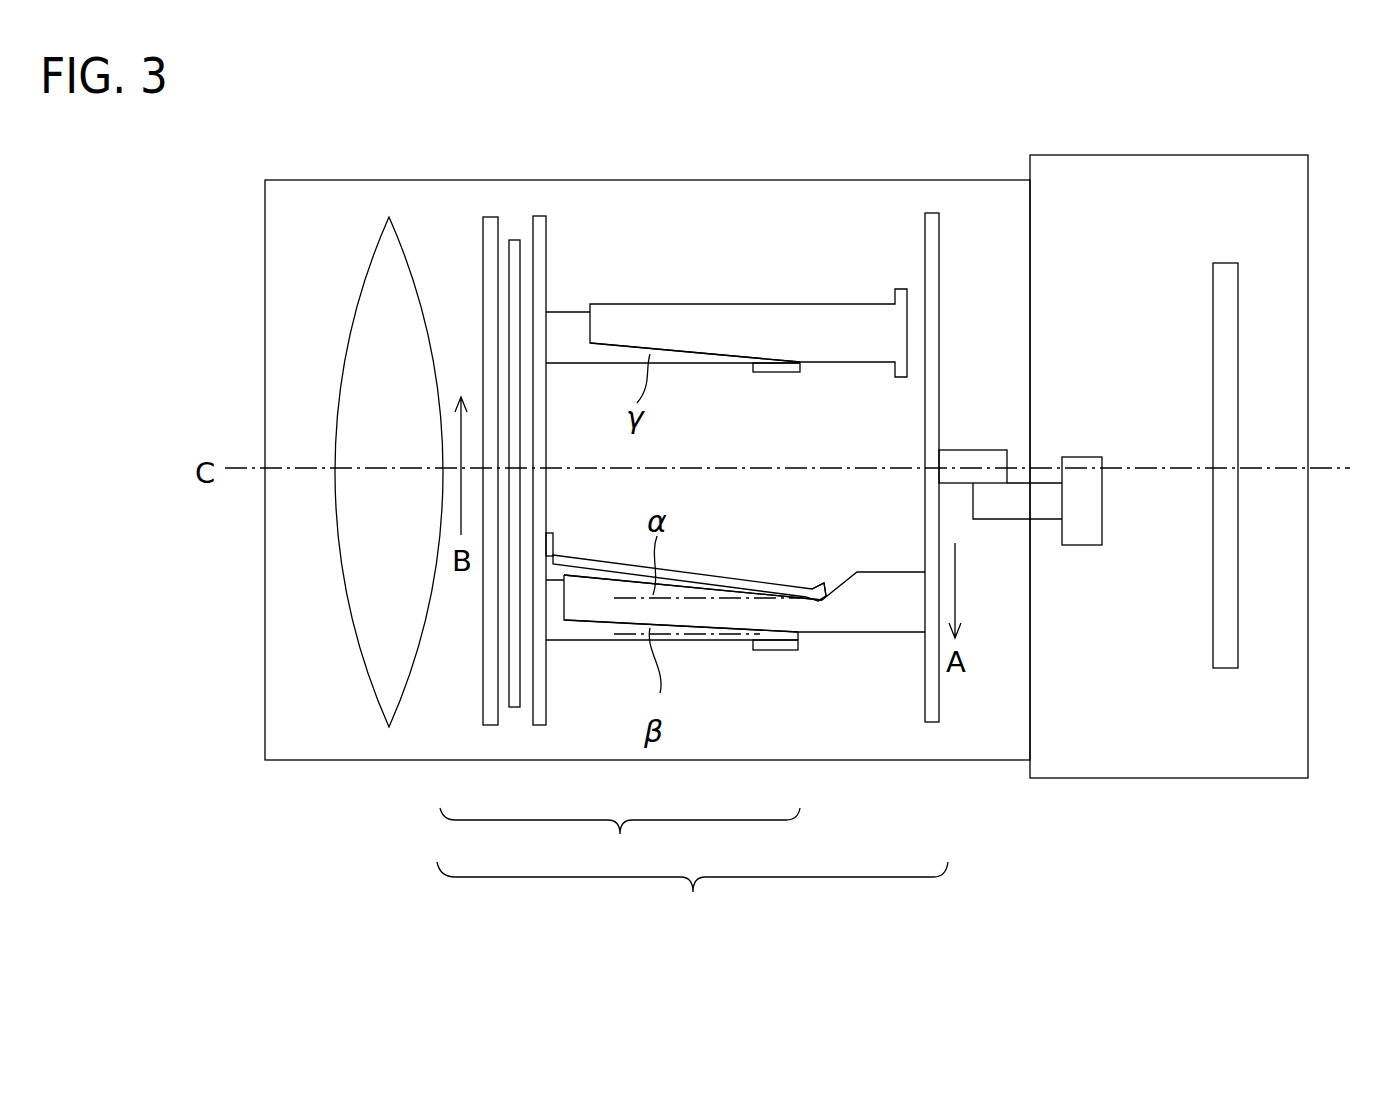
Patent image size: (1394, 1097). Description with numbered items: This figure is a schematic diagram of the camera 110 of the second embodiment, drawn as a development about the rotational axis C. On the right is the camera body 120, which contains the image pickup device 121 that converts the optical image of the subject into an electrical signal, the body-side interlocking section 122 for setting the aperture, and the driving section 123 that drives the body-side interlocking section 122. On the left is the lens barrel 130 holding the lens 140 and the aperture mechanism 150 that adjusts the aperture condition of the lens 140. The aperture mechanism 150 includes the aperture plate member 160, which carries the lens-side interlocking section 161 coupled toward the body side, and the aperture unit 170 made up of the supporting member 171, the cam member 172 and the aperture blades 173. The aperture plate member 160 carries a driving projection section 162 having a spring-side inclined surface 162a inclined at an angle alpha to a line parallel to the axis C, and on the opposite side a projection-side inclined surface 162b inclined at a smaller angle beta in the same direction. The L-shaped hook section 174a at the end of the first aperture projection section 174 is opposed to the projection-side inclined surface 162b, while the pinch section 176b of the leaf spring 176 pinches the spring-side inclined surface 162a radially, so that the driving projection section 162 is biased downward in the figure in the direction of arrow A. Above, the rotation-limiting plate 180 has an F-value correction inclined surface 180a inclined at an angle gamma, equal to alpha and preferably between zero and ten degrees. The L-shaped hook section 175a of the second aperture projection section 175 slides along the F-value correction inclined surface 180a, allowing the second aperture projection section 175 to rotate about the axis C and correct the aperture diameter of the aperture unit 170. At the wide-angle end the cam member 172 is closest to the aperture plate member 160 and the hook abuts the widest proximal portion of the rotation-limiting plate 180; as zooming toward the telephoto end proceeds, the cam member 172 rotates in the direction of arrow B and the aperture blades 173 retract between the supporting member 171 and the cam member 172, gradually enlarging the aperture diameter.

The camera 110 is at (786, 409).
The camera body 120 is at (1145, 150).
The image pickup device 121 is at (1226, 393).
The body-side interlocking section 122 is at (1050, 519).
The driving section 123 is at (1088, 509).
The lens barrel 130 is at (588, 180).
The lens 140 is at (372, 278).
The aperture mechanism 150 is at (692, 897).
The aperture plate member 160 is at (931, 710).
The lens-side interlocking section 161 is at (974, 458).
The driving projection section 162 is at (744, 603).
The spring-side inclined surface 162a is at (592, 576).
The projection-side inclined surface 162b is at (608, 624).
The aperture unit 170 is at (620, 839).
The supporting member 171 is at (485, 715).
The cam member 172 is at (540, 717).
The aperture blades 173 is at (513, 705).
The first aperture projection section 174 is at (672, 644).
The L-shaped hook section 174a is at (755, 650).
The second aperture projection section 175 is at (674, 345).
The L-shaped hook section 175a is at (773, 372).
The leaf spring 176 is at (705, 549).
The pinch section 176b is at (815, 583).
The rotation-limiting plate 180 is at (748, 330).
The F-value correction inclined surface 180a is at (698, 355).